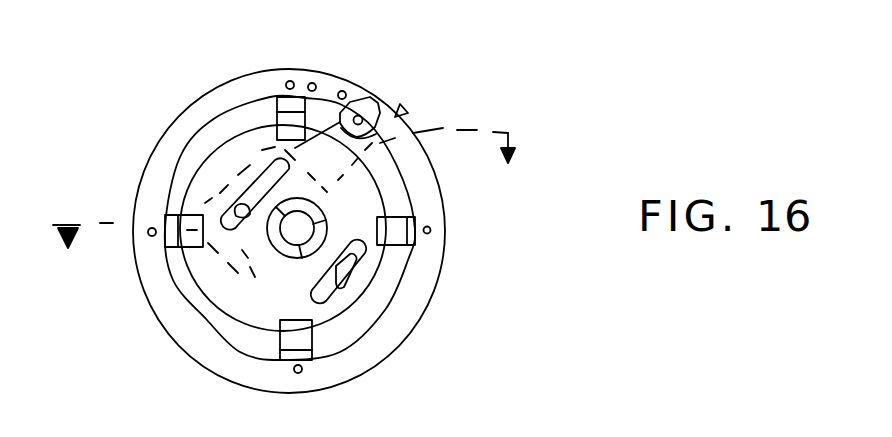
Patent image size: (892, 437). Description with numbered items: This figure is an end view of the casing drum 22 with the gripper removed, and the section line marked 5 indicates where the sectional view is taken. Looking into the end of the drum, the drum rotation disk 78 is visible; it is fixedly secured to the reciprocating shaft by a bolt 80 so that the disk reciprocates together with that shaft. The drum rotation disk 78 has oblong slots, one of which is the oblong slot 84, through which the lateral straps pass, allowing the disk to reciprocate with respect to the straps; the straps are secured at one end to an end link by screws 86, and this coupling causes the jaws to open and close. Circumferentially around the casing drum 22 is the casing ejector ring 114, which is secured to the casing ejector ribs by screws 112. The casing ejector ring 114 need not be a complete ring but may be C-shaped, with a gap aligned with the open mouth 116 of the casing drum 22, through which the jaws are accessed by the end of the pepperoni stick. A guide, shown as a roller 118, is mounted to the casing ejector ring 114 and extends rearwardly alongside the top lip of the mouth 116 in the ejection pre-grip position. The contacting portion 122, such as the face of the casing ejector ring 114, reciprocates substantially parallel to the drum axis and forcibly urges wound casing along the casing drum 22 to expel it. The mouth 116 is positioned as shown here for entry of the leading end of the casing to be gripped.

The casing drum 22 is at (437, 347).
The drum rotation disk 78 is at (258, 310).
The bolt 80 is at (319, 218).
The oblong slot 84 is at (335, 284).
The screws 86 is at (248, 214).
The screws 112 is at (290, 81).
The casing ejector ring 114 is at (211, 90).
The open mouth 116 is at (405, 105).
The roller 118 is at (380, 122).
The contacting portion 122 is at (164, 150).
The section line 5- 5 is at (284, 204).